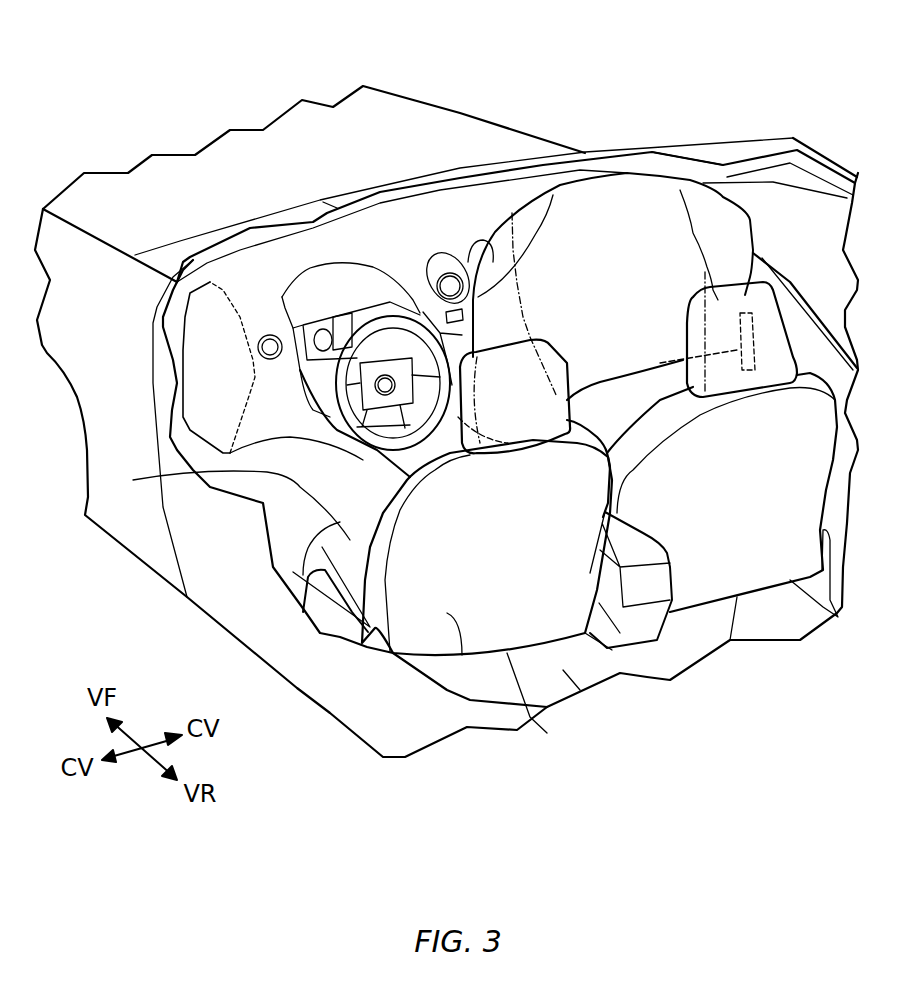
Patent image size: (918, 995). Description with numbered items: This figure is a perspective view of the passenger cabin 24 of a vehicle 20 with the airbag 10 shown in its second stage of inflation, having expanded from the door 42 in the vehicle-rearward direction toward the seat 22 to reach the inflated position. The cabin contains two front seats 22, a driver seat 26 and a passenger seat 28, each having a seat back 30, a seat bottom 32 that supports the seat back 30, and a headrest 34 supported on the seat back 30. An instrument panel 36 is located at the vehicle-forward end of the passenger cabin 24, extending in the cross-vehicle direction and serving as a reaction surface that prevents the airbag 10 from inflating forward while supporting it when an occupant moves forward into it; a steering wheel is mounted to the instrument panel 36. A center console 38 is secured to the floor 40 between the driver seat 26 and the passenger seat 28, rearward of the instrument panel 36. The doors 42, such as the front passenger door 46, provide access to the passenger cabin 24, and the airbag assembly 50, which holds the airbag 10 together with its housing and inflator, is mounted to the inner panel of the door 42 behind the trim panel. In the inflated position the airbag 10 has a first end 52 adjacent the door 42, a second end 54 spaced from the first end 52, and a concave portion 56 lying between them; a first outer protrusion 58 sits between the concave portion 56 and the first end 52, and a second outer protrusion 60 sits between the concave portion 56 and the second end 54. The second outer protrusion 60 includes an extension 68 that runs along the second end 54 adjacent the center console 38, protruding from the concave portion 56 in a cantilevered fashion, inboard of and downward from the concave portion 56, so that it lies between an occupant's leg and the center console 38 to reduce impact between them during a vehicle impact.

The airbag 10 is at (670, 168).
The vehicle 20 is at (182, 180).
The seat 22 is at (360, 559).
The passenger cabin 24 is at (403, 262).
The driver seat 26 is at (547, 733).
The passenger seat 28 is at (740, 600).
The seat back 30 is at (462, 655).
The seat bottom 32 is at (130, 483).
The headrest 34 is at (462, 440).
The instrument panel 36 is at (487, 185).
The center console 38 is at (630, 647).
The floor 40 is at (563, 670).
The door 42 is at (803, 292).
The front passenger door 46 is at (775, 262).
The airbag assembly 50 is at (752, 363).
The first end 52 is at (713, 220).
The second end 54 is at (466, 250).
The concave portion 56 is at (607, 240).
The first outer protrusion 58 is at (750, 220).
The second outer protrusion 60 is at (512, 340).
The extension 68 is at (478, 357).